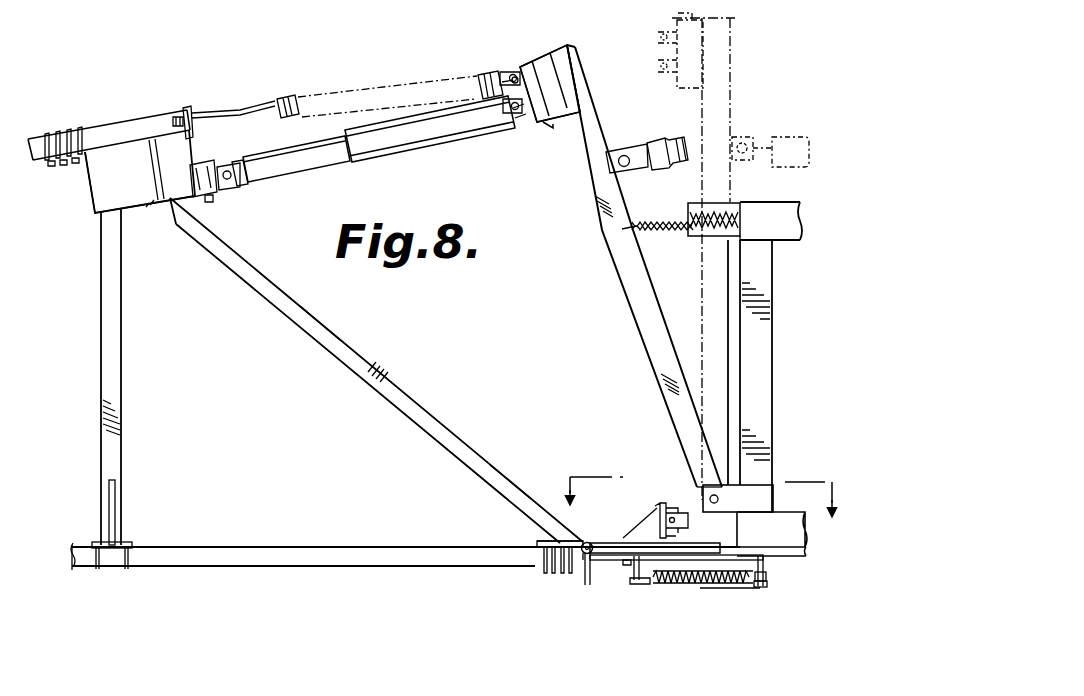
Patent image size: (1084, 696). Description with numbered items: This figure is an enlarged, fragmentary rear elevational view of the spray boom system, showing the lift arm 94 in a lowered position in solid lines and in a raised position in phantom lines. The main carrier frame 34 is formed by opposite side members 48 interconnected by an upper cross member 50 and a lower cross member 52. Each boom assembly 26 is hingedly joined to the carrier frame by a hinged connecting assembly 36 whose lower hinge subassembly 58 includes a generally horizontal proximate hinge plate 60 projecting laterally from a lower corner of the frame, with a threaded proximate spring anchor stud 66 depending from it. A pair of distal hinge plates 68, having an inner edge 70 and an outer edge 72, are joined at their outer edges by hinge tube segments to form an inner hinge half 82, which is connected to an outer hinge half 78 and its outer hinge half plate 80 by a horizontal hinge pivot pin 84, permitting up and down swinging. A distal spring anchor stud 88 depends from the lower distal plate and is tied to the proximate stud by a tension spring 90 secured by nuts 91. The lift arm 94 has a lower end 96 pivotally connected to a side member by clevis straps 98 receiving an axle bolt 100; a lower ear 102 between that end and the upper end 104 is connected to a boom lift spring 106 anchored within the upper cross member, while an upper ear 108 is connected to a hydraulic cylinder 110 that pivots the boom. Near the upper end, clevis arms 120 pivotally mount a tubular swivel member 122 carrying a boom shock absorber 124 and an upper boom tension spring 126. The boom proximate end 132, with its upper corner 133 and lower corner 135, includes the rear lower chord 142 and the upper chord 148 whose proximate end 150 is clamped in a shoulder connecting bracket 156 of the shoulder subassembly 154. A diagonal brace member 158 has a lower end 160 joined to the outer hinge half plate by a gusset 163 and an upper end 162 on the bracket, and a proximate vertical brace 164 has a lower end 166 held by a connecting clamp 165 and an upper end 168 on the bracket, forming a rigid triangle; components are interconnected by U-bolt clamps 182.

The boom assembly 26 is at (78, 567).
The main carrier frame 34 is at (803, 203).
The hinged connecting assembly 36 is at (707, 596).
The side member 48 is at (773, 352).
The upper cross member 50 is at (803, 239).
The lower cross member 52 is at (806, 552).
The lower hinge subassembly 58 is at (768, 562).
The proximate hinge plate 60 is at (752, 546).
The proximate spring anchor stud 66 is at (768, 585).
The distal hinge plates 68 is at (622, 538).
The inner edge 70 is at (722, 545).
The outer edge 72 is at (595, 543).
The outer hinge half 78 is at (538, 542).
The outer hinge half plate 80 is at (535, 555).
The inner hinge half 82 is at (592, 556).
The hinge pivot pin 84 is at (587, 565).
The distal spring anchor stud 88 is at (633, 570).
The tension spring 90 is at (672, 583).
The nuts 91 is at (760, 587).
The lift arm 94 is at (577, 50).
The lower end 96 is at (703, 497).
The clevis straps 98 is at (775, 490).
The axle bolt 100 is at (720, 499).
The lower ear 102 is at (648, 235).
The upper end 104 is at (578, 62).
The boom lift spring 106 is at (722, 210).
The upper ear 108 is at (612, 150).
The hydraulic cylinder 110 is at (654, 170).
The clevis arms 120 is at (530, 62).
The lift arm tubular swivel member 122 is at (572, 95).
The boom shock absorber 124 is at (410, 152).
The upper boom tension spring 126 is at (283, 97).
The proximate end 132 is at (424, 407).
The upper corner 133 is at (157, 135).
The lower corner 135 is at (580, 560).
The rear/outer lower chord 142 is at (240, 566).
The upper chord 148 is at (44, 135).
The upper chord proximate end 150 is at (83, 129).
The inner boom support or shoulder subassembly 154 is at (188, 105).
The shoulder connecting bracket 156 is at (92, 212).
The diagonal brace member 158 is at (328, 348).
The lower end 160 is at (582, 538).
The upper end 162 is at (170, 206).
The gusset 163 is at (509, 486).
The proximate vertical brace 164 is at (122, 453).
The connecting clamp 165 is at (132, 545).
The lower end 166 is at (120, 526).
The upper end 168 is at (115, 206).
The U-bolt clamps 182 is at (128, 570).